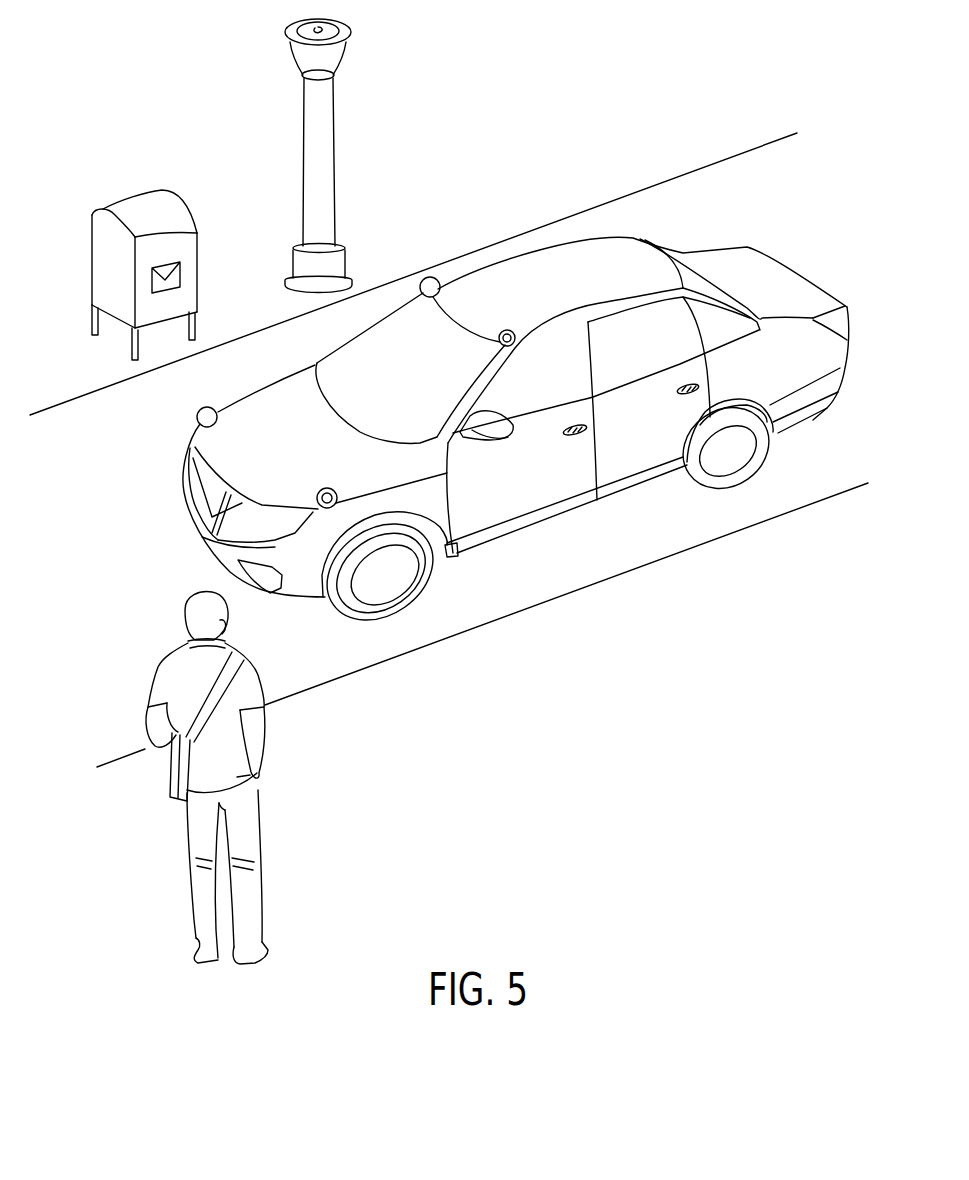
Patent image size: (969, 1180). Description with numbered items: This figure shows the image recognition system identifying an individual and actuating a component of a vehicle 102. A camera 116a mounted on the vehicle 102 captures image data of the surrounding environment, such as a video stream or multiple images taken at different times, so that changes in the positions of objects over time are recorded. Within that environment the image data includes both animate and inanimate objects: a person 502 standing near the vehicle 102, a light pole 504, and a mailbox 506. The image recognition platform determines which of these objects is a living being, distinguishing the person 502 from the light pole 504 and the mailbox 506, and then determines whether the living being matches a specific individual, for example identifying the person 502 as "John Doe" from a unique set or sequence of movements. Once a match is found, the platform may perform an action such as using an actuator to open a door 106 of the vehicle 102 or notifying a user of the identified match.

The vehicle 102 is at (516, 419).
The door 106 is at (650, 453).
The camera 116a is at (508, 330).
The person 502 is at (258, 817).
The light pole 504 is at (335, 163).
The mailbox 506 is at (198, 233).